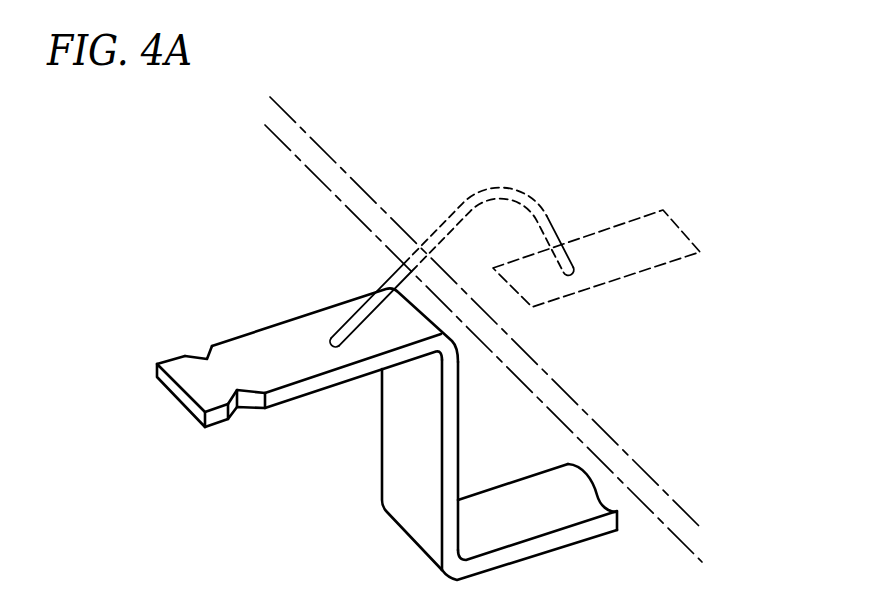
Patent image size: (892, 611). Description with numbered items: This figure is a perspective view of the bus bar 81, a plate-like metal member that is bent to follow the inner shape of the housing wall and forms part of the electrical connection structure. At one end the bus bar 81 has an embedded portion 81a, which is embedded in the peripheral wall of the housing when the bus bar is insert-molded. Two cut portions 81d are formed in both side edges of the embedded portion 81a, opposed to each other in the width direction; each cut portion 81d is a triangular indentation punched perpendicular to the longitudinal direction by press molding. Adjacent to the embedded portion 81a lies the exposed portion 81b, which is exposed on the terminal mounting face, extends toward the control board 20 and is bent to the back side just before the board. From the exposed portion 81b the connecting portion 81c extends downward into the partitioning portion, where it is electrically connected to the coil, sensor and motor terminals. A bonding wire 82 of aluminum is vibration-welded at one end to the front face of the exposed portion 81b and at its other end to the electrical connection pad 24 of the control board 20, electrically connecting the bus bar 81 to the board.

The control board 20 is at (581, 348).
The electrical connection pad 24 is at (673, 240).
The bus bar 81 is at (373, 436).
The embedded portion 81a is at (188, 376).
The exposed portion 81b is at (300, 330).
The connecting portion 81c is at (392, 451).
The cut portion 81d is at (209, 346).
The bonding wire 82 is at (463, 201).